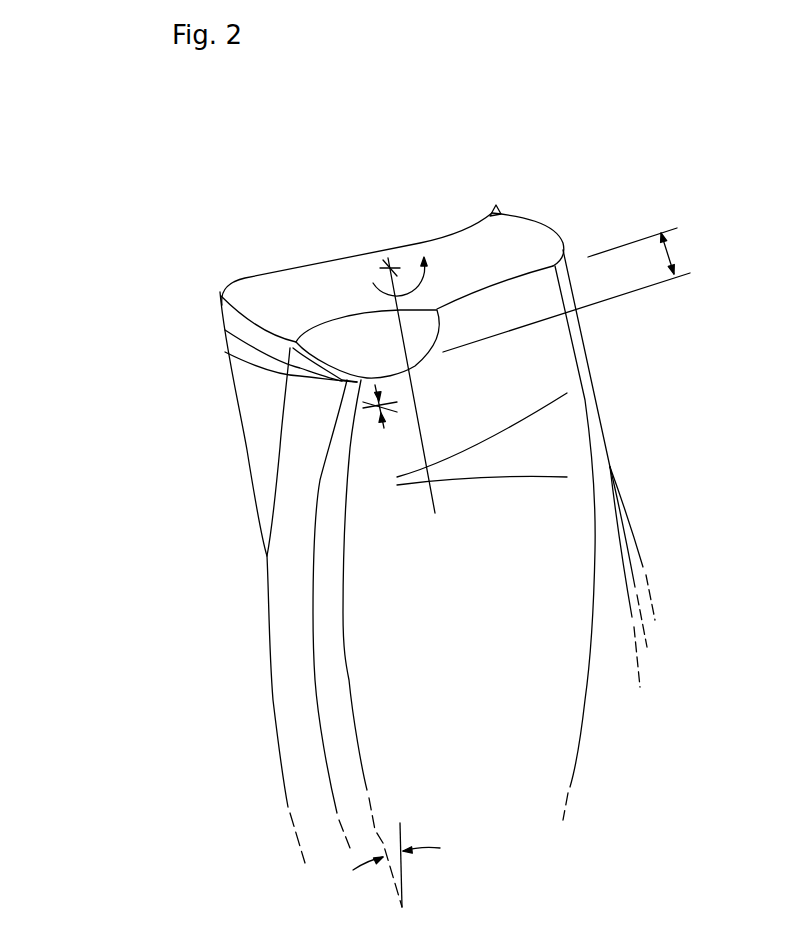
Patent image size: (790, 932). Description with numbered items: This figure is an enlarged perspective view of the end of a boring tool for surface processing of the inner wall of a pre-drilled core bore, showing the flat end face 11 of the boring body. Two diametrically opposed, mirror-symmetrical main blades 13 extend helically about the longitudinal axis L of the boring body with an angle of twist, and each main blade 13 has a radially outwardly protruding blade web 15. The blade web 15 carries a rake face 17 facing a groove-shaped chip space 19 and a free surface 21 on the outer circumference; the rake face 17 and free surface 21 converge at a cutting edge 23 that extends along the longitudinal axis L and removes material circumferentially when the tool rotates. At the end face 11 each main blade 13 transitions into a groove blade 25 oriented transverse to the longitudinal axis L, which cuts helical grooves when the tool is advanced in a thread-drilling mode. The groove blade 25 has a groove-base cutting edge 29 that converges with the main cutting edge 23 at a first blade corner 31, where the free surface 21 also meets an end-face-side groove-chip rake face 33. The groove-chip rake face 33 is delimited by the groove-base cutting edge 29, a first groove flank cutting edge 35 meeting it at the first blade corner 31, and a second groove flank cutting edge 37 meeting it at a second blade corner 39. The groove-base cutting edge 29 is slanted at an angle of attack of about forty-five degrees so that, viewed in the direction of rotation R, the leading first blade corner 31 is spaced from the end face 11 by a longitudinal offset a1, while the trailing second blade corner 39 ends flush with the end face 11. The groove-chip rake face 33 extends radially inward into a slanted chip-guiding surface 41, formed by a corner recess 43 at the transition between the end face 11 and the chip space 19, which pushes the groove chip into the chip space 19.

The end face 11 is at (263, 305).
The main blade 13 is at (505, 209).
The blade web 15 is at (294, 490).
The rake face 17 is at (327, 503).
The chip space 19 is at (538, 559).
The free surface 21 is at (287, 555).
The cutting edge 23 is at (313, 600).
The groove blade 25 is at (75, 205).
The groove-base cutting edge 29 is at (225, 330).
The first blade corner 31 is at (343, 381).
The groove-chip rake face 33 is at (357, 333).
The first groove flank cutting edge 35 is at (225, 352).
The second groove flank cutting edge 37 is at (222, 293).
The second blade corner 39 is at (305, 338).
The chip-guiding surface 41 is at (303, 343).
The corner recess 43 is at (448, 270).
The direction of rotation R is at (424, 314).
The longitudinal axis L is at (413, 397).
The longitudinal offset a1 is at (578, 289).